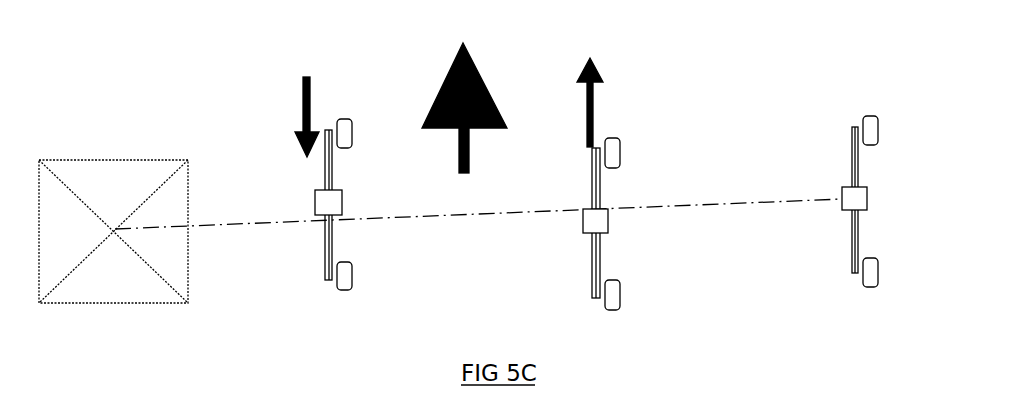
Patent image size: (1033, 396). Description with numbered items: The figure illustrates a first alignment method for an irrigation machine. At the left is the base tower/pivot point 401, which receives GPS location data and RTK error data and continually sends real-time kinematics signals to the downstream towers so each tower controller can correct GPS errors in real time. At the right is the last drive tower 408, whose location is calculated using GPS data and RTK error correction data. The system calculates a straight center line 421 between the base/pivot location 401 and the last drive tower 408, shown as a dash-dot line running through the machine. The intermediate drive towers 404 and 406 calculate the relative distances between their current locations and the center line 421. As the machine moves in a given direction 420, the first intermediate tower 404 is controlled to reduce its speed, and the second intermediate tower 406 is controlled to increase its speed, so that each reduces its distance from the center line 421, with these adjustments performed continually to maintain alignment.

The base tower/pivot point 401 is at (148, 157).
The first intermediate drive tower 404 is at (338, 197).
The second intermediate drive tower 406 is at (603, 212).
The last drive tower 408 is at (863, 190).
The direction of movement 420 is at (477, 67).
The center line 421 is at (720, 203).